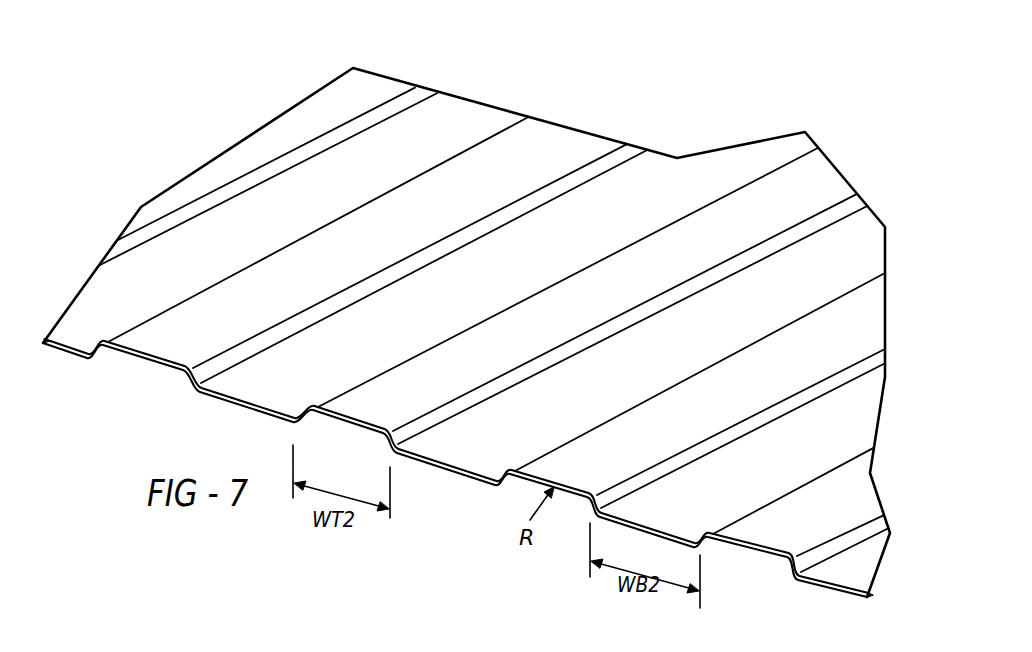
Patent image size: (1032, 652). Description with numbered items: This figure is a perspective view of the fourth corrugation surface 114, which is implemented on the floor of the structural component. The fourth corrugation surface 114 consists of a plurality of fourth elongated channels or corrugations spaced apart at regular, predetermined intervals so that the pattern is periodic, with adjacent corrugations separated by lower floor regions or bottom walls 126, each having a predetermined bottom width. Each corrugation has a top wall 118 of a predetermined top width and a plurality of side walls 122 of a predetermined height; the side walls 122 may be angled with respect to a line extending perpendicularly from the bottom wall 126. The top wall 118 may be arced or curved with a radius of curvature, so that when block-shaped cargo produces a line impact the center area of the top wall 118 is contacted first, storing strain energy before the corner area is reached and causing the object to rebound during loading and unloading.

The fourth corrugation surface 114 is at (827, 125).
The top wall 118 is at (553, 128).
The side walls 122 is at (625, 157).
The bottom wall 126 is at (688, 175).